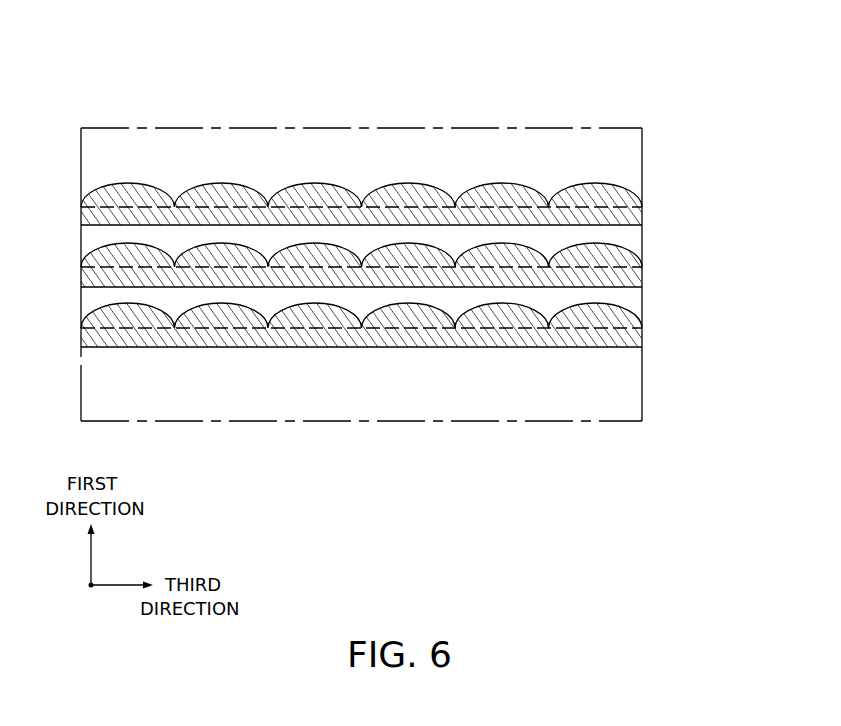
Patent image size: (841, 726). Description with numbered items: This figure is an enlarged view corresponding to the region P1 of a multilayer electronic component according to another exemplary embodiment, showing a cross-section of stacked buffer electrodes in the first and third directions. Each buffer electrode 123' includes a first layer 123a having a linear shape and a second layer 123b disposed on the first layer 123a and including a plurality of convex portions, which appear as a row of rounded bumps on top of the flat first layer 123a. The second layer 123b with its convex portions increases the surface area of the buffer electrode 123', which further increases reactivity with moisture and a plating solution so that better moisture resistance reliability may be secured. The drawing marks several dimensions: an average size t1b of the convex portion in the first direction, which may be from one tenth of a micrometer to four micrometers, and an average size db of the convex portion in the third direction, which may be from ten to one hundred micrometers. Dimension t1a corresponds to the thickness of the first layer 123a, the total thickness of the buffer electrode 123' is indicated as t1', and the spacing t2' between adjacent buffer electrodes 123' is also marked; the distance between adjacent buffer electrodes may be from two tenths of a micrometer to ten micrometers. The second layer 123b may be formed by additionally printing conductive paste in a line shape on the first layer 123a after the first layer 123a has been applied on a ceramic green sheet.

The buffer electrode 123' is at (431, 333).
The first layer 123a is at (636, 336).
The second layer 123b is at (608, 305).
The thickness of first layer t1' is at (450, 202).
The thickness of flat portion t1a is at (642, 207).
The average size of the convex portion in the first direction t1b is at (642, 183).
The gap thickness between layers t2' is at (424, 237).
The average size of the convex portion in the third direction db is at (455, 207).
The region P1 is at (357, 483).